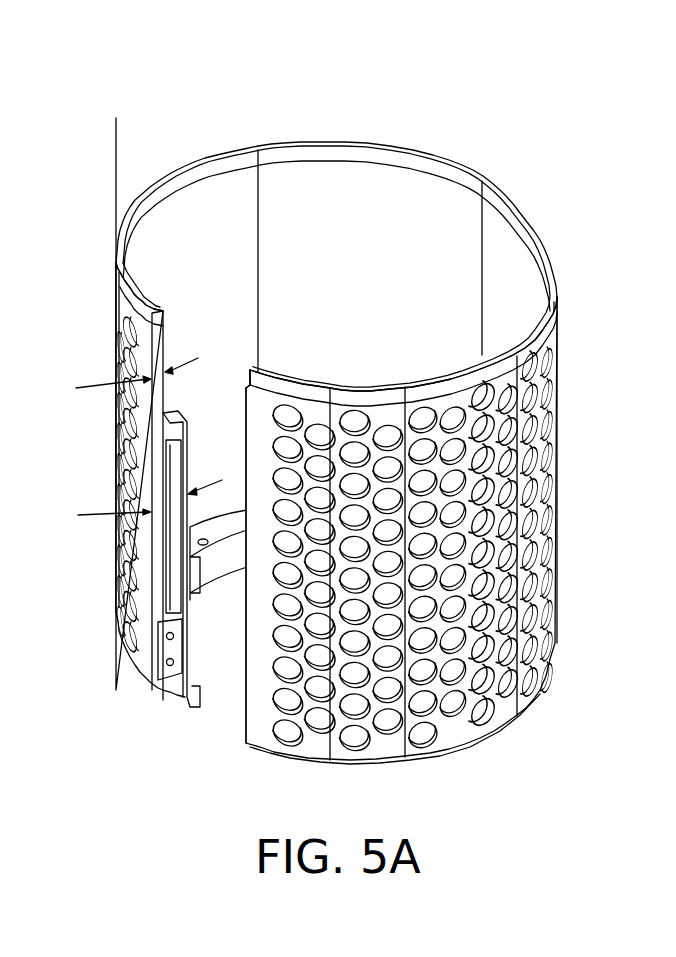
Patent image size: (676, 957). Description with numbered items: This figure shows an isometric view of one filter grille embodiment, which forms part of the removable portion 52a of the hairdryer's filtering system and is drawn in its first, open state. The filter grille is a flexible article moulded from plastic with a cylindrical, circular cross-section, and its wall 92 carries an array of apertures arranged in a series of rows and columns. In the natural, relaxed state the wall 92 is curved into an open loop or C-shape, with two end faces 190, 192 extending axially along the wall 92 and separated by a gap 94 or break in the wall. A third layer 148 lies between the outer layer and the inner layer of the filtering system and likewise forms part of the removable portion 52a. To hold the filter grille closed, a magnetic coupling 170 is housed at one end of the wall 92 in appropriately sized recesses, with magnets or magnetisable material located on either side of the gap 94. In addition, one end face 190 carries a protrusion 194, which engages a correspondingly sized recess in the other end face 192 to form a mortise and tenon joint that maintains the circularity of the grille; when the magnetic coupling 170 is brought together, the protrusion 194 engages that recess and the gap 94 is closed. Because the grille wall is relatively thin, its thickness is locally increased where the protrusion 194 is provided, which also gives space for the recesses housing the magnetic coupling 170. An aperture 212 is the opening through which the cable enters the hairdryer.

The removable portion 52a is at (101, 87).
The third layer 148 is at (322, 170).
The gap 94 is at (266, 350).
The wall 92 is at (377, 748).
The end face 190 is at (150, 350).
The end face 192 is at (245, 465).
The protrusion 194 is at (172, 487).
The magnetic coupling 170 is at (160, 655).
The aperture 212 is at (222, 688).